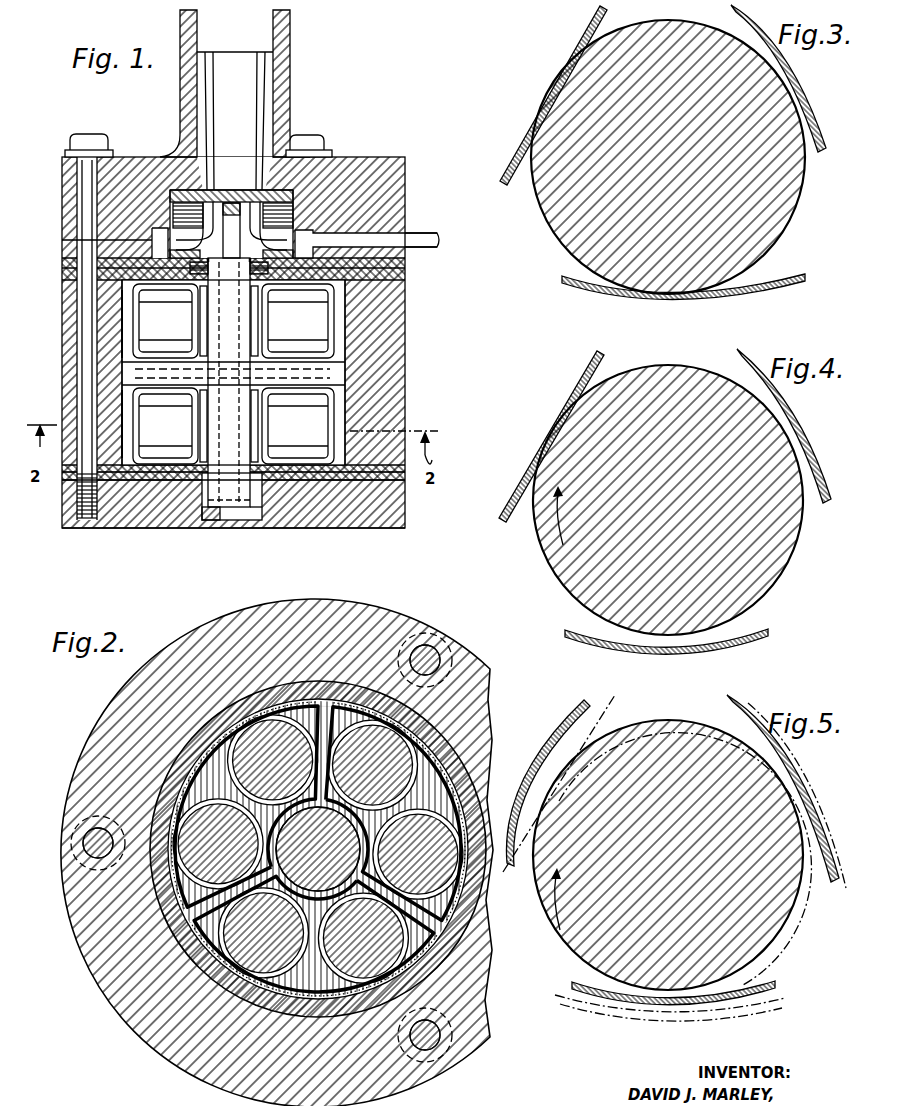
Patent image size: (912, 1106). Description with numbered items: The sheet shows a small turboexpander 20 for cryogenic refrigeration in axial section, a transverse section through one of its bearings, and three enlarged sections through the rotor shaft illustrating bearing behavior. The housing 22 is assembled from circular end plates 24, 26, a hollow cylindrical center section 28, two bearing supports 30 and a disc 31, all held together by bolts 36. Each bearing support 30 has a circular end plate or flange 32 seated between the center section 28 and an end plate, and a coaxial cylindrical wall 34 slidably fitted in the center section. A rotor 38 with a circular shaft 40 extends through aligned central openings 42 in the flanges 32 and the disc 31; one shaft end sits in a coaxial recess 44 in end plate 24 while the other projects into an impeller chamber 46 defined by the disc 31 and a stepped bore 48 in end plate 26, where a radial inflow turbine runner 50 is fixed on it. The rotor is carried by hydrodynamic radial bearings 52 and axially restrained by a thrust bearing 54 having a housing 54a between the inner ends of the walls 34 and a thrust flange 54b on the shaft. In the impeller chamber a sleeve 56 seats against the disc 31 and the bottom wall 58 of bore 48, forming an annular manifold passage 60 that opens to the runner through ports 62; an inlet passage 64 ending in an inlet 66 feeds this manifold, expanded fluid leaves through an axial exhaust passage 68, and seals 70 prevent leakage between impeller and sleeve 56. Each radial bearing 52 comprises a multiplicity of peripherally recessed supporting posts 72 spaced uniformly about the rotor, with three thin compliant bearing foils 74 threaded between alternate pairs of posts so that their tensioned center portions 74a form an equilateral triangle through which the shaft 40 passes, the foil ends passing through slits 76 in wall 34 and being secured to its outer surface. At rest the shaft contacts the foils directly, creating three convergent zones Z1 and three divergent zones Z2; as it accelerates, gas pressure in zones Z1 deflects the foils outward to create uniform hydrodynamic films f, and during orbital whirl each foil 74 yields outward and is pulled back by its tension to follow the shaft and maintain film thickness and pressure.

In FIG. 1, the turboexpander 20 is at (362, 132).
In FIG. 1, the housing 22 is at (402, 157).
In FIG. 1, the end plate 24 is at (337, 518).
In FIG. 1, the end plate 26 is at (405, 200).
In FIG. 1, the center section 28 is at (398, 376).
In FIG. 2, the center section 28 is at (403, 639).
In FIG. 1, the bearing support 30 is at (406, 277).
In FIG. 1, the disc 31 is at (405, 265).
In FIG. 1, the end plate (flange) 32 is at (397, 284).
In FIG. 1, the cylindrical wall 34 is at (167, 342).
In FIG. 2, the cylindrical wall 34 is at (163, 1040).
In FIG. 1, the bolt 36 is at (90, 136).
In FIG. 2, the bolt 36 is at (452, 662).
In FIG. 1, the rotor 38 is at (228, 506).
In FIG. 1, the shaft 40 is at (238, 488).
In FIG. 2, the shaft 40 is at (356, 853).
In FIG. 3, the shaft 40 is at (781, 217).
In FIG. 4, the shaft 40 is at (793, 546).
In FIG. 5, the shaft 40 is at (783, 910).
In FIG. 1, the central opening 42 is at (207, 274).
In FIG. 1, the recess 44 is at (252, 518).
In FIG. 1, the impeller chamber 46 is at (229, 202).
In FIG. 1, the stepped bore 48 is at (172, 215).
In FIG. 1, the turbine runner 50 is at (260, 197).
In FIG. 1, the radial bearing 52 is at (140, 301).
In FIG. 1, the thrust bearing 54 is at (135, 364).
In FIG. 1, the thrust bearing housing 54a is at (140, 370).
In FIG. 1, the thrust flange 54b is at (140, 381).
In FIG. 1, the sleeve 56 is at (178, 195).
In FIG. 1, the bottom wall 58 is at (175, 197).
In FIG. 1, the manifold passage 60 is at (150, 246).
In FIG. 1, the port 62 is at (204, 262).
In FIG. 1, the inlet passage 64 is at (398, 234).
In FIG. 1, the inlet 66 is at (435, 244).
In FIG. 1, the exhaust passage 68 is at (197, 30).
In FIG. 1, the seal 70 is at (231, 230).
In FIG. 1, the supporting post 72 is at (167, 321).
In FIG. 2, the supporting post 72 is at (252, 774).
In FIG. 1, the bearing foil 74 is at (322, 326).
In FIG. 2, the bearing foil 74 is at (428, 729).
In FIG. 3, the bearing foil 74 is at (566, 62).
In FIG. 4, the bearing foil 74 is at (517, 473).
In FIG. 5, the bearing foil 74 is at (602, 712).
In FIG. 2, the foil center portion 74a is at (410, 808).
In FIG. 3, the foil center portion 74a is at (528, 100).
In FIG. 4, the foil center portion 74a is at (557, 402).
In FIG. 5, the foil center portion 74a is at (580, 734).
In FIG. 2, the slit 76 is at (323, 690).
In FIG. 3, the convergent zone Z1 is at (769, 270).
In FIG. 3, the divergent zone Z2 is at (605, 26).
In FIG. 4, the hydrodynamic bearing film f is at (535, 418).
In FIG. 5, the hydrodynamic bearing film f is at (798, 793).